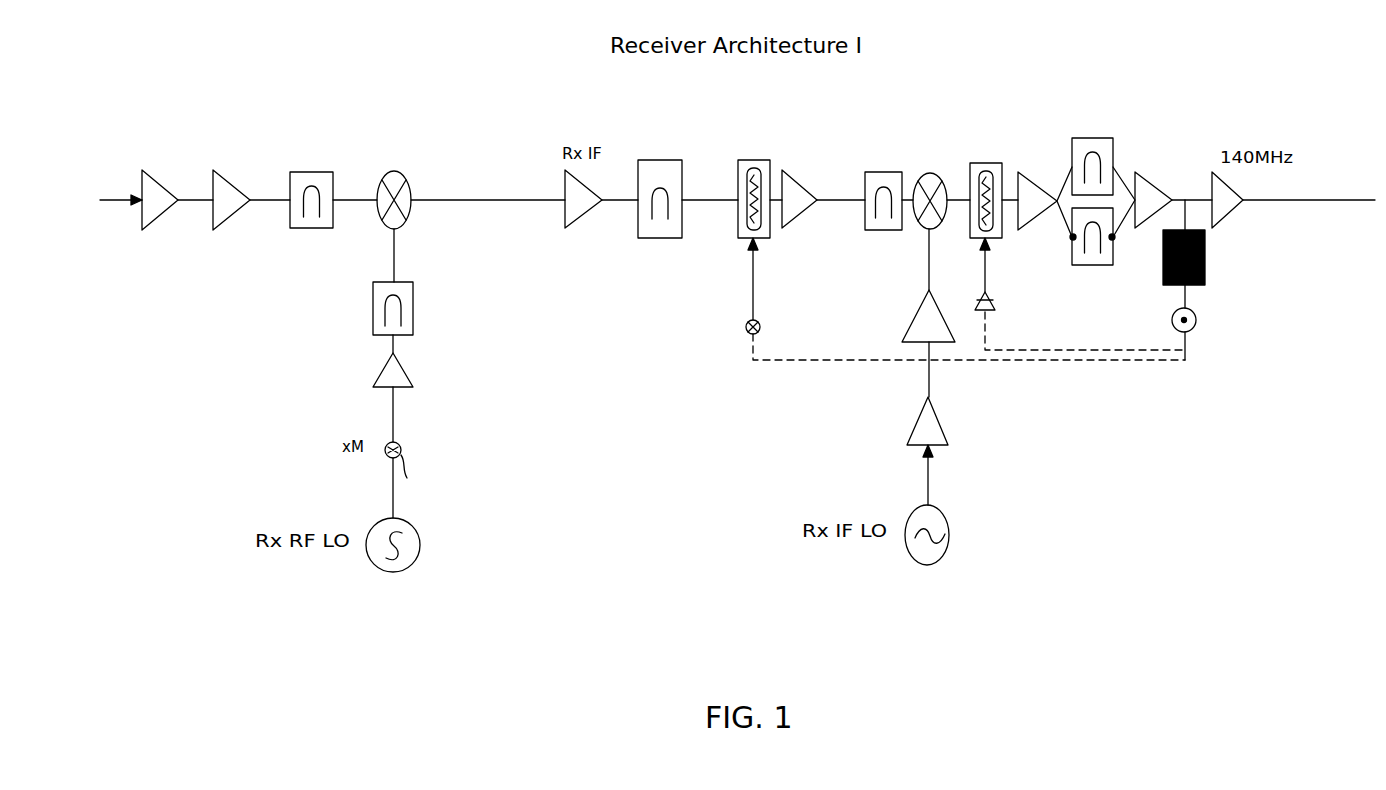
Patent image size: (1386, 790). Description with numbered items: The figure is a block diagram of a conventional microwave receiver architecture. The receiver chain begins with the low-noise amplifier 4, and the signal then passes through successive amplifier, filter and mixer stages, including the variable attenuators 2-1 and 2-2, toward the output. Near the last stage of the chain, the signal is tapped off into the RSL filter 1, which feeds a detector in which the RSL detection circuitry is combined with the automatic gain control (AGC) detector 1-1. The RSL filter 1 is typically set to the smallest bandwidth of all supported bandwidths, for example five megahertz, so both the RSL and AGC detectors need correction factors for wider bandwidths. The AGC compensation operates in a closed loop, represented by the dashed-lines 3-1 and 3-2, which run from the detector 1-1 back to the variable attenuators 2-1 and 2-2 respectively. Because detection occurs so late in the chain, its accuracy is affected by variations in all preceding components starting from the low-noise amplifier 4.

The low-noise amplifier 4 is at (167, 184).
The variable attenuator 2-1 is at (765, 167).
The variable attenuator 2-2 is at (992, 167).
The dashed-line 3-1 is at (835, 358).
The dashed-line 3-2 is at (1070, 348).
The RSL filter 1 is at (1205, 253).
The automatic gain control (AGC) detector 1-1 is at (1197, 320).